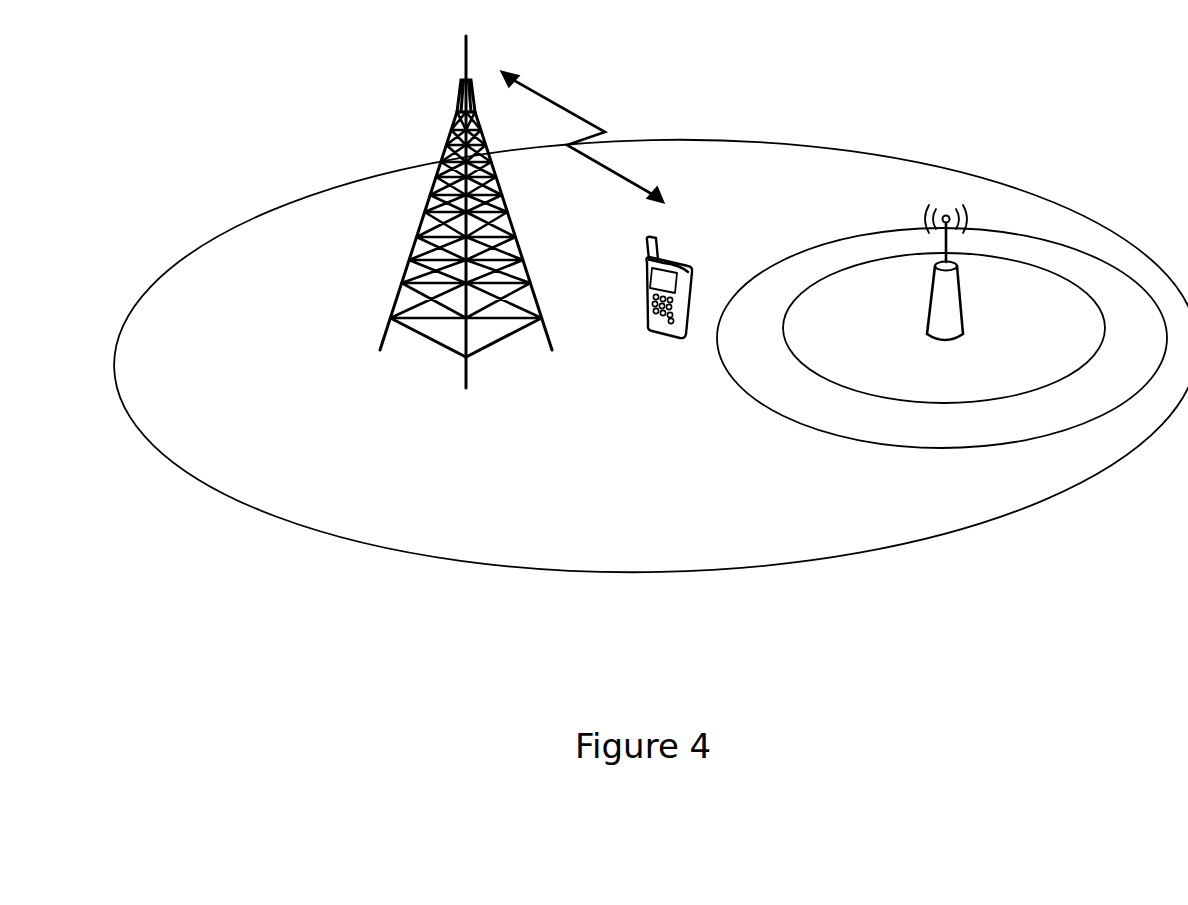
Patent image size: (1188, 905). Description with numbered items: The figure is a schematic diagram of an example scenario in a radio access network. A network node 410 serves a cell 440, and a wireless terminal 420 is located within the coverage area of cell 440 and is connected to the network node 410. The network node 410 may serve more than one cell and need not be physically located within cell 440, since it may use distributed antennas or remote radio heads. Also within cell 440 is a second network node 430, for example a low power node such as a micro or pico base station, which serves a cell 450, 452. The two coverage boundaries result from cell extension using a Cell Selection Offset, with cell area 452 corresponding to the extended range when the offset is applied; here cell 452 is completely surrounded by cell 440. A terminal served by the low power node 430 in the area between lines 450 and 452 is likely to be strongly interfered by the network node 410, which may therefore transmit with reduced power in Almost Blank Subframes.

The network node 410 is at (452, 50).
The wireless terminal 420 is at (668, 342).
The second network node 430 is at (960, 329).
The cell 440 is at (400, 548).
The cell 450 is at (1010, 398).
The cell area 452 is at (815, 430).